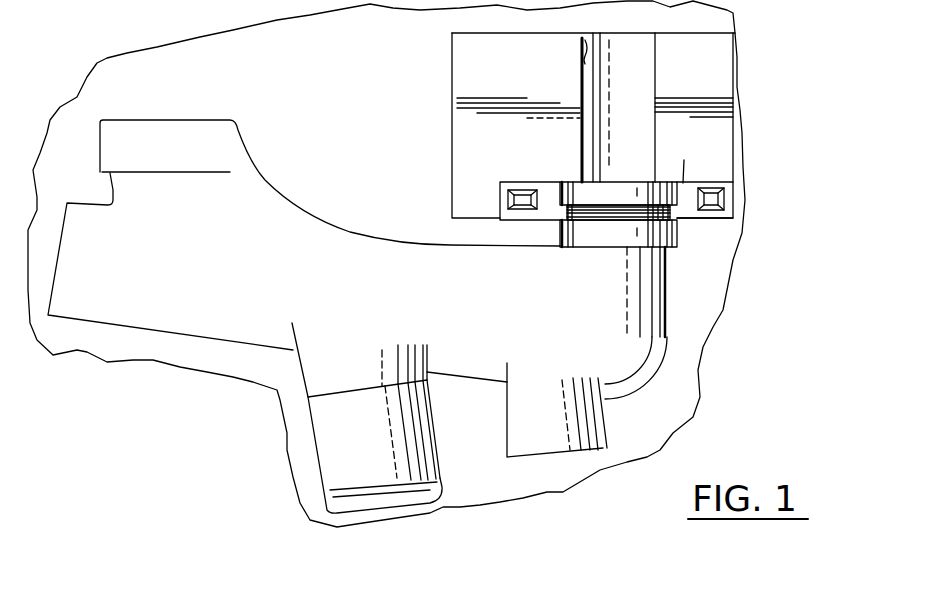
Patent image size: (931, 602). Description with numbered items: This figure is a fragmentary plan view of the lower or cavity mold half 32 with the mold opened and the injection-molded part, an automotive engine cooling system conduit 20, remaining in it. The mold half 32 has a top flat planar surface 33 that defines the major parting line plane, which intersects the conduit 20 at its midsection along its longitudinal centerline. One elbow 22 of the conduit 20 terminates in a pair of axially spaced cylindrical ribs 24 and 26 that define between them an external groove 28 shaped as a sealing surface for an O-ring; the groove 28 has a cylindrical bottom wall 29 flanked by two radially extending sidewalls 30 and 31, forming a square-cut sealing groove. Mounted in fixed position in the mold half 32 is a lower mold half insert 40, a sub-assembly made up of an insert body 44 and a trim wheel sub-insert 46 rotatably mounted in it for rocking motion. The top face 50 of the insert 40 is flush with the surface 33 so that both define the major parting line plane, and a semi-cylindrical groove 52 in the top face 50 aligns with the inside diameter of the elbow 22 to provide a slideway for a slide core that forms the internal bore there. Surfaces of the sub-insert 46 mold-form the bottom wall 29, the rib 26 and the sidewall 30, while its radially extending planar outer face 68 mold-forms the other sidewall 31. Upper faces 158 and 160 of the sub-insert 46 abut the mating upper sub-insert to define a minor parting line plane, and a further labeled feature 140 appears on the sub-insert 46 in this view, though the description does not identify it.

The conduit 20 is at (282, 197).
The elbow 22 is at (667, 293).
The cylindrical rib 24 is at (677, 236).
The cylindrical rib 26 is at (558, 183).
The external groove 28 is at (668, 211).
The cylindrical bottom wall 29 is at (567, 209).
The radial sidewall 30 is at (556, 206).
The radial sidewall 31 is at (570, 214).
The lower mold half 32 is at (293, 476).
The top flat planar surface 33 is at (390, 139).
The lower mold half insert 40 is at (452, 60).
The insert body 44 is at (458, 98).
The trim wheel sub-insert 46 is at (702, 183).
The top face 50 is at (540, 68).
The semi-cylindrical groove 52 is at (644, 88).
The radially extending planar outer face 68 is at (738, 218).
The fastener head 140 is at (722, 199).
The upper face 158 is at (728, 190).
The upper face 160 is at (683, 183).